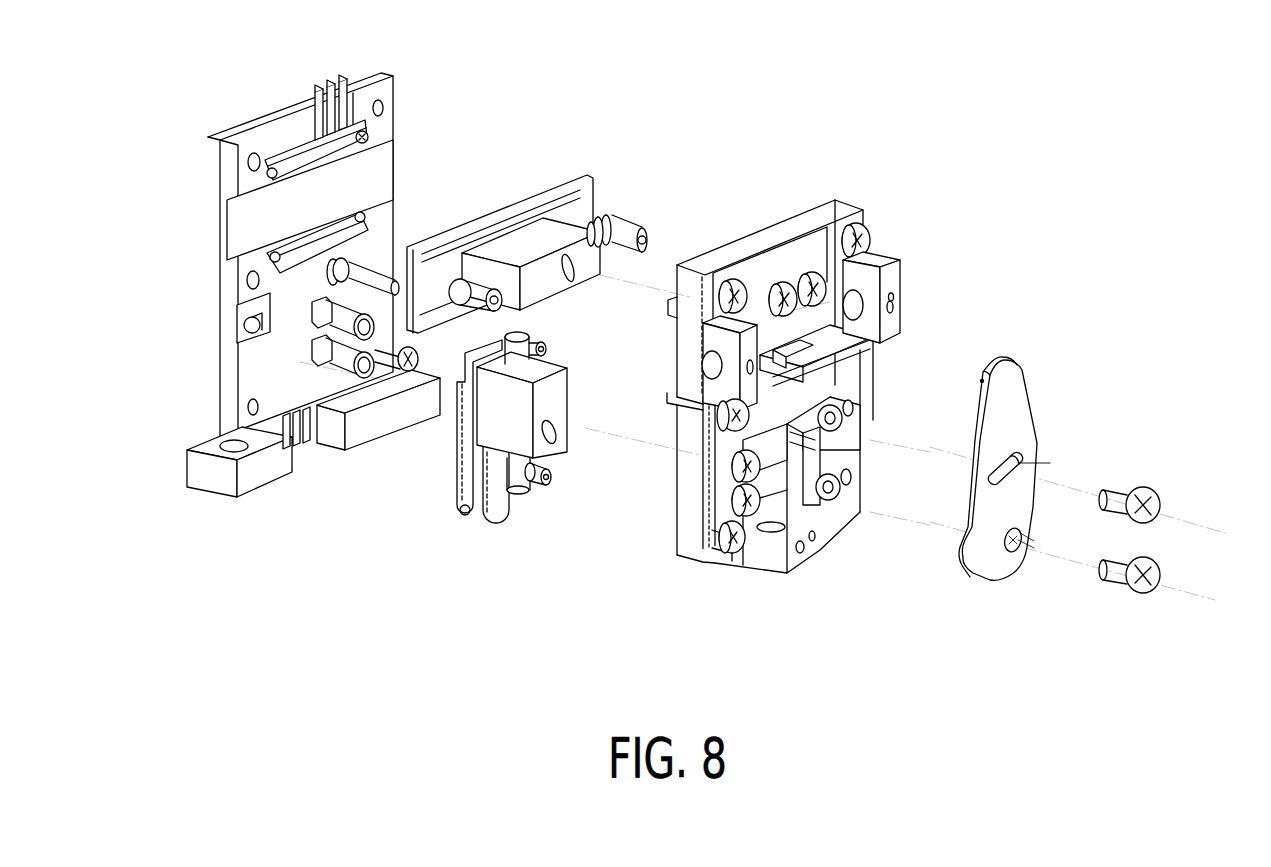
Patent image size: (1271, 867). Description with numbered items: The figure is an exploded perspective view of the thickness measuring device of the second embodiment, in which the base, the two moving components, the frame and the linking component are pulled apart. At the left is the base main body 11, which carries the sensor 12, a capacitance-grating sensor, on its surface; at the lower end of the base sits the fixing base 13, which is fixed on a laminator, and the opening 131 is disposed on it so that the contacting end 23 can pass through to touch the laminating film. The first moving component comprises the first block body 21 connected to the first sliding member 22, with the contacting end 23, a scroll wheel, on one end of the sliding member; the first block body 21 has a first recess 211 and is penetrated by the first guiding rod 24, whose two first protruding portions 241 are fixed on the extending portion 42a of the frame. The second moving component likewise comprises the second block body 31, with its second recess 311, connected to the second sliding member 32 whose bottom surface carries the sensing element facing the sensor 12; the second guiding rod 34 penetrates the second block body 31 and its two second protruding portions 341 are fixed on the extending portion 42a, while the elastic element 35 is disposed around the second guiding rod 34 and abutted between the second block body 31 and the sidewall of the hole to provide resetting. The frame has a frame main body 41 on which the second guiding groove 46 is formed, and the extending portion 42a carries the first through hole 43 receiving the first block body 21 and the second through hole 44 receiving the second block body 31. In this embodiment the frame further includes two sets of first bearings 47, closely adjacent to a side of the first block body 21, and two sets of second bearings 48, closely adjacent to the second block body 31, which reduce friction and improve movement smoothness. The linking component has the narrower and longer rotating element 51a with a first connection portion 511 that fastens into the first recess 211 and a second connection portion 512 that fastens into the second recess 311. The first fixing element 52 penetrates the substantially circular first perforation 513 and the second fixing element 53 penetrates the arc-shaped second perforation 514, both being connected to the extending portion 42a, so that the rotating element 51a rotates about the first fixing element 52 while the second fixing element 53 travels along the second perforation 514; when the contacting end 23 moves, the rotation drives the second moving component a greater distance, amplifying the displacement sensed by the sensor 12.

The base main body 11 is at (230, 170).
The sensor 12 is at (303, 160).
The fixing base 13 is at (210, 463).
The opening 131 is at (305, 448).
The first block body 21 is at (575, 497).
The first recess 211 is at (589, 497).
The first sliding member 22 is at (428, 471).
The contacting end 23 is at (455, 562).
The first guiding rod 24 is at (506, 568).
The first protruding portions 241 is at (574, 544).
The second block body 31 is at (476, 176).
The second recess 311 is at (606, 156).
The second sliding member 32 is at (557, 169).
The second guiding rod 34 is at (500, 182).
The second protruding portions 341 is at (719, 204).
The elastic element 35 is at (644, 151).
The frame main body 41 is at (770, 382).
The extending portion 42a is at (893, 305).
The first through hole 43 is at (870, 530).
The second through hole 44 is at (888, 292).
The second guiding groove 46 is at (743, 255).
The first bearing 47 is at (759, 550).
The second bearing 48 is at (799, 194).
The rotating element 51a is at (1013, 417).
The first connection portion 511 is at (990, 580).
The second connection portion 512 is at (982, 380).
The first perforation 513 is at (1023, 543).
The second perforation 514 is at (1040, 440).
The first fixing element 52 is at (1147, 590).
The second fixing element 53 is at (1163, 503).